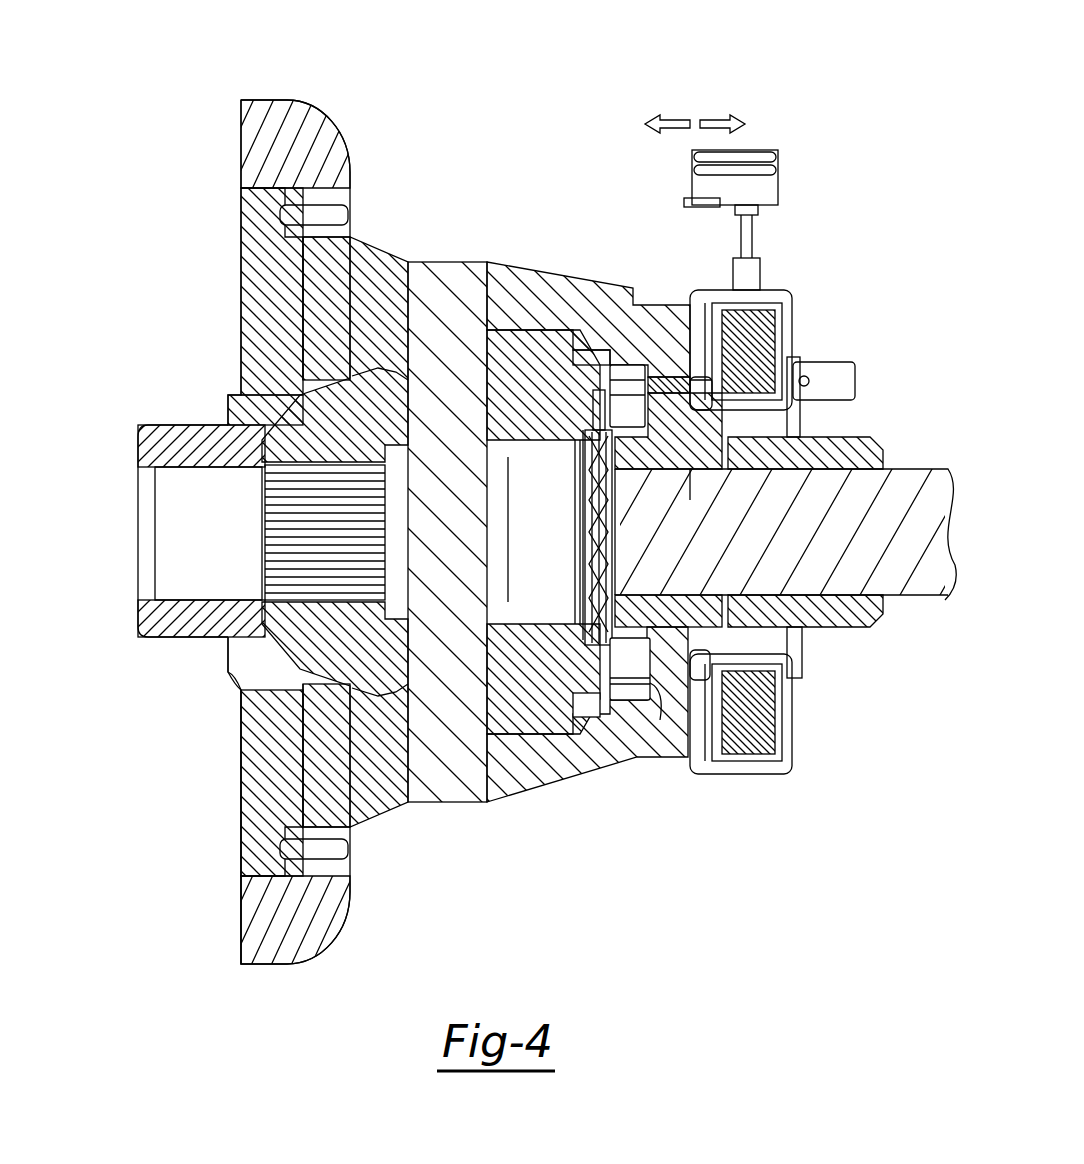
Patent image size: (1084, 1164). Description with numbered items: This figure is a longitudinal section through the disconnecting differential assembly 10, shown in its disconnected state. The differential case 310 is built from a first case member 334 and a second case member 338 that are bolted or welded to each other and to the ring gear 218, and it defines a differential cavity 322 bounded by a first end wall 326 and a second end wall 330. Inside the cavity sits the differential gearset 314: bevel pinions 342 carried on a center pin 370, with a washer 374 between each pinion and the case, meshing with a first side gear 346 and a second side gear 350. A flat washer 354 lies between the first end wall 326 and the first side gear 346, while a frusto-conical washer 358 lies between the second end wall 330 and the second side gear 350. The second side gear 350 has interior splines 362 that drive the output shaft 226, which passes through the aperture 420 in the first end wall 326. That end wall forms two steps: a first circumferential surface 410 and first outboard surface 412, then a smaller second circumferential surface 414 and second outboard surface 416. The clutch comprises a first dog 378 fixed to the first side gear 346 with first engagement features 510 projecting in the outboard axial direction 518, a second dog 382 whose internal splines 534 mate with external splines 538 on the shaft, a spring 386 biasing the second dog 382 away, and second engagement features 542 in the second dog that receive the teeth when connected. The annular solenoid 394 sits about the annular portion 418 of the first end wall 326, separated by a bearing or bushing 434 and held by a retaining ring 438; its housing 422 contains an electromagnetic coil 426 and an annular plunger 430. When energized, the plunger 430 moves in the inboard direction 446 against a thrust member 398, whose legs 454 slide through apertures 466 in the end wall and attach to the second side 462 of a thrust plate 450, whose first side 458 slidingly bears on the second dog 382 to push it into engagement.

The disconnecting differential assembly 10 is at (122, 163).
The ring gear 218 is at (275, 108).
The output shaft 226 is at (925, 470).
The differential case 310 is at (233, 840).
The differential gearset 314 is at (317, 698).
The differential cavity 322 is at (297, 325).
The first end wall 326 is at (685, 343).
The second end wall 330 is at (255, 715).
The first case member 334 is at (372, 825).
The second case member 338 is at (240, 807).
The bevel pinions 342 is at (345, 372).
The first side gear 346 is at (545, 580).
The second side gear 350 is at (278, 620).
The washer 354 is at (598, 716).
The washer 358 is at (262, 452).
The interior splines 362 is at (280, 502).
The center pin 370 is at (452, 265).
The washer 374 is at (378, 380).
The first dog 378 is at (620, 397).
The second dog 382 is at (622, 365).
The spring 386 is at (583, 498).
The annular solenoid 394 is at (798, 277).
The thrust member 398 is at (655, 365).
The first circumferential surface 410 is at (630, 700).
The first outboard surface 412 is at (578, 598).
The second circumferential surface 414 is at (707, 650).
The second outboard surface 416 is at (700, 452).
The annular portion 418 is at (753, 417).
The aperture 420 is at (815, 455).
The housing 422 is at (790, 300).
The electromagnetic coil 426 is at (765, 743).
The annular plunger 430 is at (717, 745).
The bearing or bushing 434 is at (785, 660).
The retaining ring 438 is at (802, 647).
The inboard direction 446 is at (667, 117).
The thrust plate 450 is at (655, 680).
The legs 454 is at (695, 385).
The first side 458 is at (645, 688).
The second side 462 is at (680, 678).
The aperture 466 is at (666, 385).
The first engagement features 510 is at (602, 415).
The outboard axial direction 518 is at (718, 117).
The internal splines 534 is at (695, 483).
The external splines 538 is at (650, 593).
The second engagement features 542 is at (590, 380).